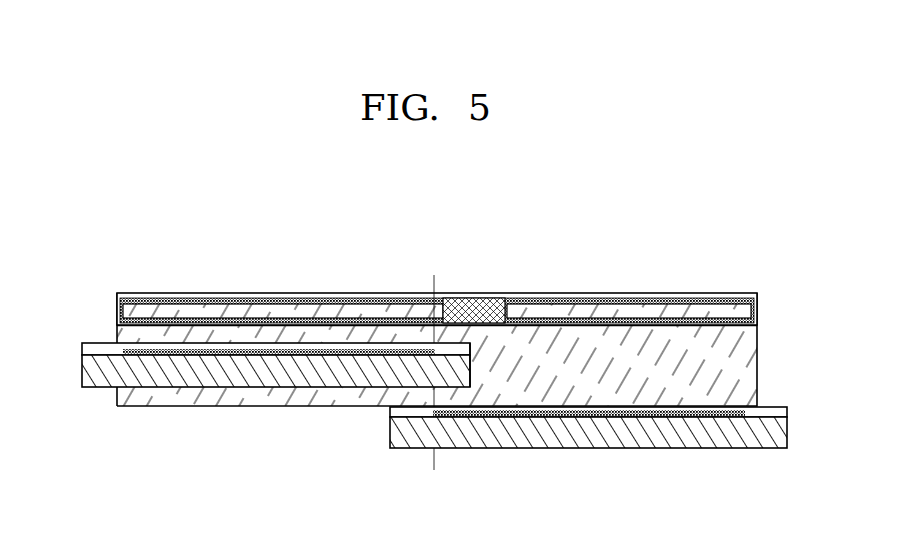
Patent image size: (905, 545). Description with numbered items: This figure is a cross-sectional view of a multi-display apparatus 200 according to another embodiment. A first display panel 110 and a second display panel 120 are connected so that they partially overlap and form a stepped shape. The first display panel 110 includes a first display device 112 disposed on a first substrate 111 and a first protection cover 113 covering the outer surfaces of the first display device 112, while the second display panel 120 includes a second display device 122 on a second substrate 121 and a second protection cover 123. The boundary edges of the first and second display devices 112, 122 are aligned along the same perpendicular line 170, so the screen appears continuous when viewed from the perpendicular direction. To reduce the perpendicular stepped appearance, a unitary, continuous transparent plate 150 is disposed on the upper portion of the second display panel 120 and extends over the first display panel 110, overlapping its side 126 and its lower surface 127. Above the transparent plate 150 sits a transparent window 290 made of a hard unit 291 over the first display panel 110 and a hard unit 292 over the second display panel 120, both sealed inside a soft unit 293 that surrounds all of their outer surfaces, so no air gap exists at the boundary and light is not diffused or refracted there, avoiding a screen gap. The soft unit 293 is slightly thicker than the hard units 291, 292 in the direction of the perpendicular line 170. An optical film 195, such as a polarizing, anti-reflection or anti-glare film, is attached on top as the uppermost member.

The multi-display apparatus 200 is at (95, 228).
The first display panel 110 is at (96, 395).
The first substrate 111 is at (82, 372).
The first display device 112 is at (156, 340).
The first protection cover 113 is at (82, 347).
The second display panel 120 is at (724, 458).
The second substrate 121 is at (787, 437).
The second display device 122 is at (752, 401).
The second protection cover 123 is at (787, 409).
The side 126 is at (470, 365).
The lower surface 127 is at (297, 386).
The transparent plate 150 is at (748, 340).
The perpendicular line 170 is at (436, 388).
The optical film 195 is at (749, 294).
The transparent window 290 is at (608, 243).
The hard unit 291 is at (341, 303).
The hard unit 292 is at (611, 304).
The soft unit 293 is at (472, 304).